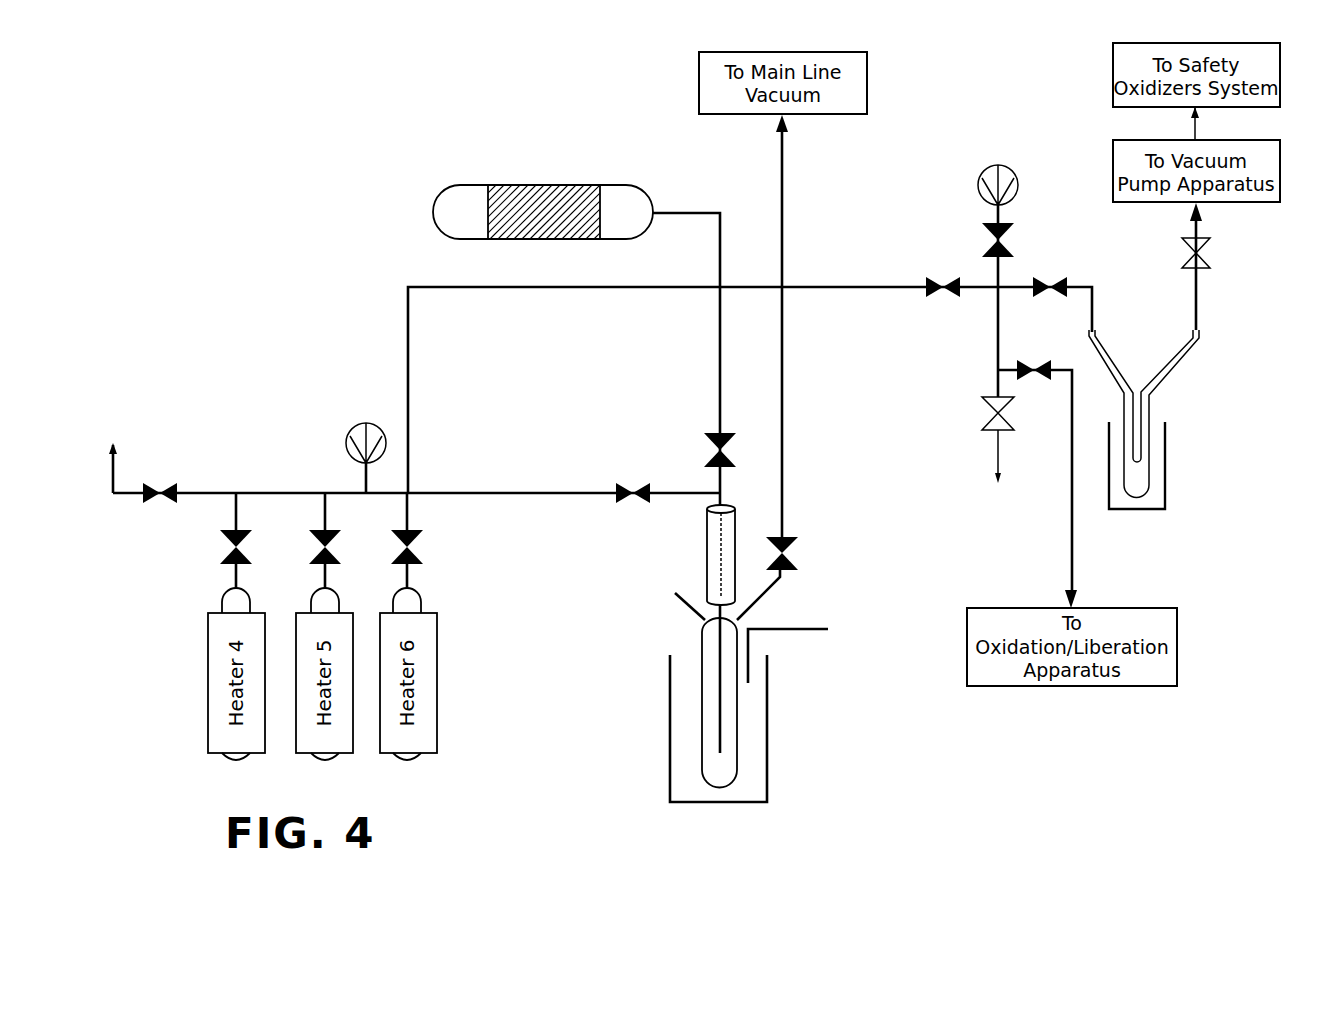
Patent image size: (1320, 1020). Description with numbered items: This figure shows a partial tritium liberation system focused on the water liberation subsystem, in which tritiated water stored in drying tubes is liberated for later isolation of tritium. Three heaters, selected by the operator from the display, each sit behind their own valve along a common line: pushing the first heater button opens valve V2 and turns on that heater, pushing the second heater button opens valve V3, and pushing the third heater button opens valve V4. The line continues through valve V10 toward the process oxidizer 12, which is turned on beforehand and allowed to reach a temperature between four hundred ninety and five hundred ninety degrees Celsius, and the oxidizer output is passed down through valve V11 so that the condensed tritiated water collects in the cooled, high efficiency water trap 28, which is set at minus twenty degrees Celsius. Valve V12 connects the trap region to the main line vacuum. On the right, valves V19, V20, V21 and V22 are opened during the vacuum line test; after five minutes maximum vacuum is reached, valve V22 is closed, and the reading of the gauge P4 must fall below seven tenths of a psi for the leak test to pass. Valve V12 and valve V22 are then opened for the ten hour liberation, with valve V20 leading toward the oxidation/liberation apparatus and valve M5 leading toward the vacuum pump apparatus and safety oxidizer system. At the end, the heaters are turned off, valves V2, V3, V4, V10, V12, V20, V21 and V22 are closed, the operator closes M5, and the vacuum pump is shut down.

The process oxidizer 12 is at (618, 202).
The water trap 28 is at (727, 772).
The valve V2 is at (225, 547).
The valve V3 is at (314, 547).
The valve V4 is at (396, 547).
The valve V10 is at (633, 482).
The valve V11 is at (737, 450).
The valve V12 is at (799, 553).
The valve V19 is at (943, 277).
The valve V20 is at (1034, 360).
The valve V21 is at (1012, 240).
The valve V22 is at (1050, 277).
The valve M5 is at (1210, 253).
The pressure gauge P4 is at (998, 174).